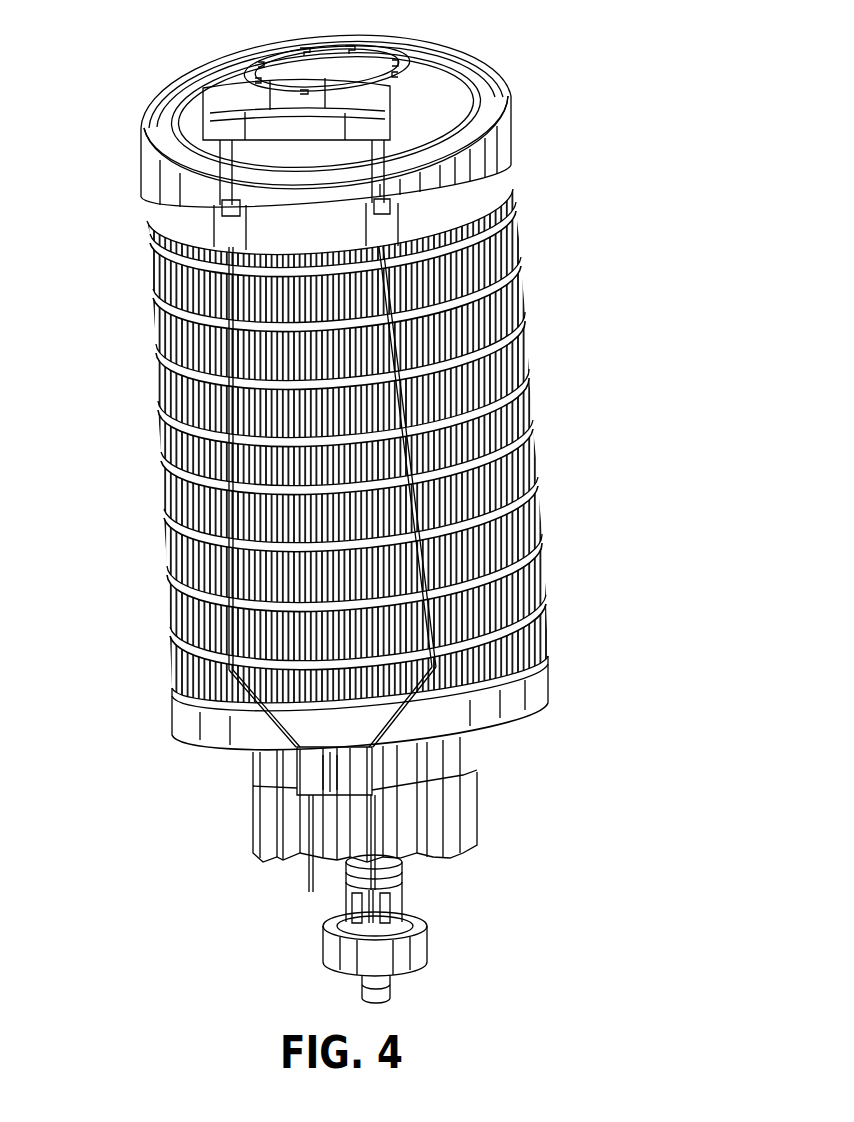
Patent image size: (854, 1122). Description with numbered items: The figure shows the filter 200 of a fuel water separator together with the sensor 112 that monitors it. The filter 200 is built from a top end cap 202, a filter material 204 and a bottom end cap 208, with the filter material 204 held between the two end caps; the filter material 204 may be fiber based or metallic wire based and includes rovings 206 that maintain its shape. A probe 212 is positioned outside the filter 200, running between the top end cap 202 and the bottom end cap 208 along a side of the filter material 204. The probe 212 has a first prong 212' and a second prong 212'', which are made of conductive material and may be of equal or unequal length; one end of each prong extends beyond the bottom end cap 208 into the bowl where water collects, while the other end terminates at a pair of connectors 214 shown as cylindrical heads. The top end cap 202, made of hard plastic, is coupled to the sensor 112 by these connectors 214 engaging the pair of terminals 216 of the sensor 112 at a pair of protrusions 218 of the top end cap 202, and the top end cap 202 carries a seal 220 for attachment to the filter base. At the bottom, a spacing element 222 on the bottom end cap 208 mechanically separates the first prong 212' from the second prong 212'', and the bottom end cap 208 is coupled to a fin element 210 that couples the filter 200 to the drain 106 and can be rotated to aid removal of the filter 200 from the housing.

The drain 106 is at (420, 923).
The sensor 112 is at (292, 92).
The filter 200 is at (507, 100).
The top end cap 202 is at (515, 160).
The filter material 204 is at (525, 465).
The rovings 206 is at (532, 542).
The bottom end cap 208 is at (537, 695).
The fin element 210 is at (467, 795).
The probe 212 is at (373, 294).
The first prong 212' is at (383, 377).
The second prong 212'' is at (306, 341).
The pair of connectors 214 is at (368, 206).
The pair of terminals 216 is at (167, 122).
The pair of protrusions 218 is at (148, 165).
The seal 220 is at (373, 60).
The spacing element 222 is at (325, 775).